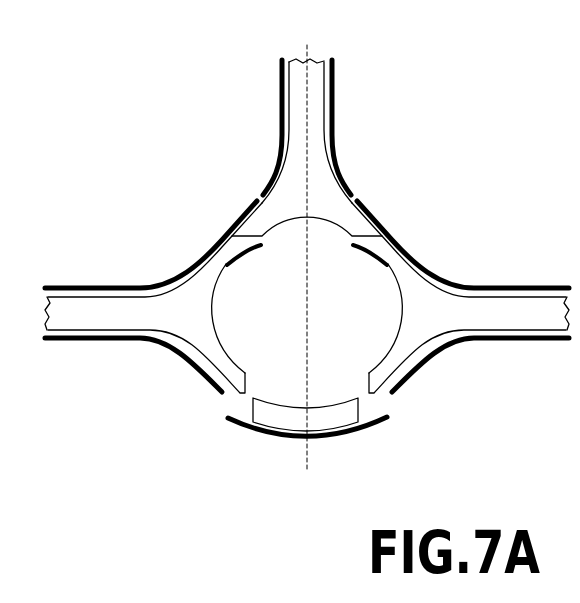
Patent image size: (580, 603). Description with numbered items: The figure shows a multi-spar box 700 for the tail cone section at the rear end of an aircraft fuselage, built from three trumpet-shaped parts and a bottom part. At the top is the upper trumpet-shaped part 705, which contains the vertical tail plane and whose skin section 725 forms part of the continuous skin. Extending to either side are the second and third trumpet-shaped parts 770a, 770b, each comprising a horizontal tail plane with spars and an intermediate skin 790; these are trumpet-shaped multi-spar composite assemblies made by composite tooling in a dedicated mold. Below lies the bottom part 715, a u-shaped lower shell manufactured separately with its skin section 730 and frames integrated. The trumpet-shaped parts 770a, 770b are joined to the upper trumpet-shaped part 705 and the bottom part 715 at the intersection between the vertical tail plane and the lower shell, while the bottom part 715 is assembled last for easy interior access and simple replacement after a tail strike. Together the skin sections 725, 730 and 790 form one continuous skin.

The multi-spar box 700 is at (307, 255).
The upper trumpet-shaped part 705 is at (357, 147).
The skin section 725 is at (280, 157).
The second trumpet-shaped part 770a is at (165, 263).
The third trumpet-shaped part 770b is at (457, 262).
The intermediate skin 790 is at (183, 357).
The bottom part 715 is at (257, 443).
The skin section 730 is at (367, 430).